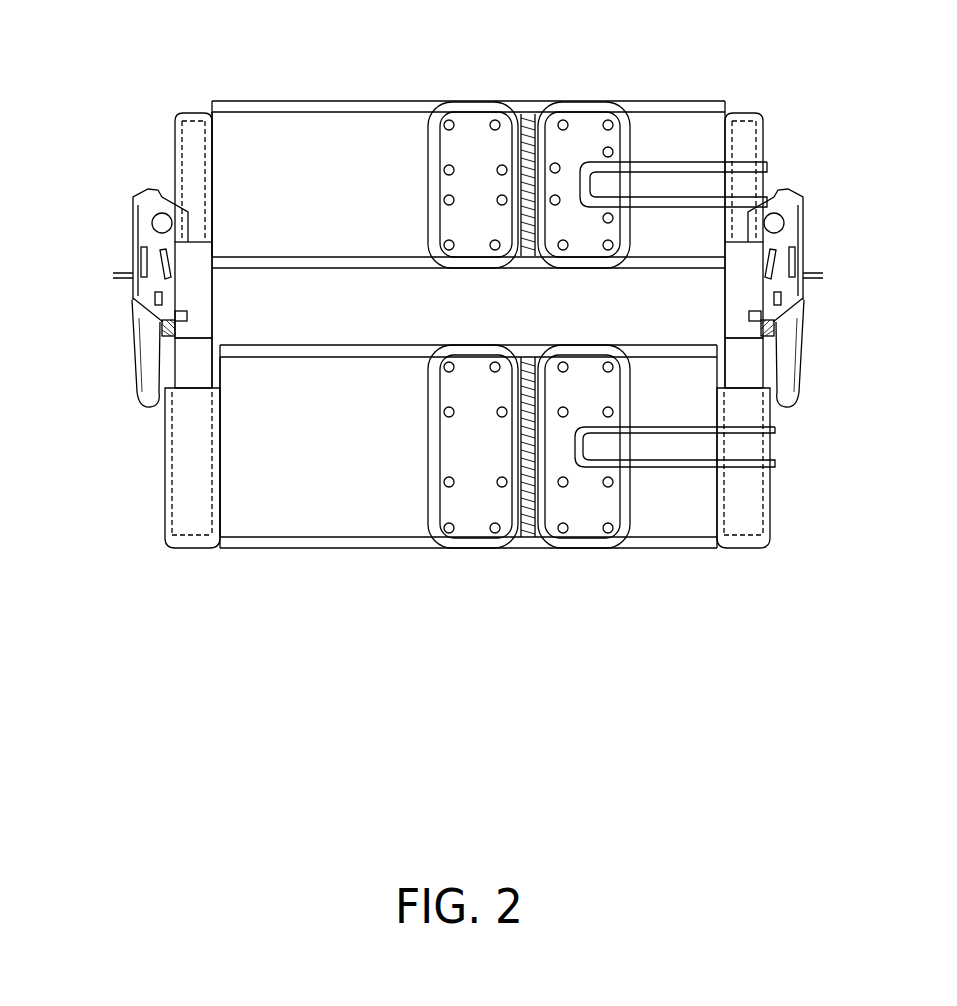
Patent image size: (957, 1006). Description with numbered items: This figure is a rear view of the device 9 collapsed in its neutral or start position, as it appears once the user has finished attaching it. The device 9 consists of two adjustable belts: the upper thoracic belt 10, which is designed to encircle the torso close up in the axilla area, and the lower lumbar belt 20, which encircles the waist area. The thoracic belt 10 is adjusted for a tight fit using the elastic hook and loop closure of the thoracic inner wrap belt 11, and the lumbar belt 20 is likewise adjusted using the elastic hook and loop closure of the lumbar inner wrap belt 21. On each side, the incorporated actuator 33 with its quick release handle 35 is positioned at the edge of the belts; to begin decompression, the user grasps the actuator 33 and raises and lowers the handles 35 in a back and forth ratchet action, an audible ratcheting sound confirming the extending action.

The device 9 is at (168, 119).
The thoracic belt 10 is at (486, 92).
The thoracic inner wrap belt 11 is at (318, 130).
The lumbar belt 20 is at (412, 590).
The lumbar inner wrap belt 21 is at (290, 510).
The actuator 33 is at (131, 283).
The quick release handle 35 is at (122, 385).